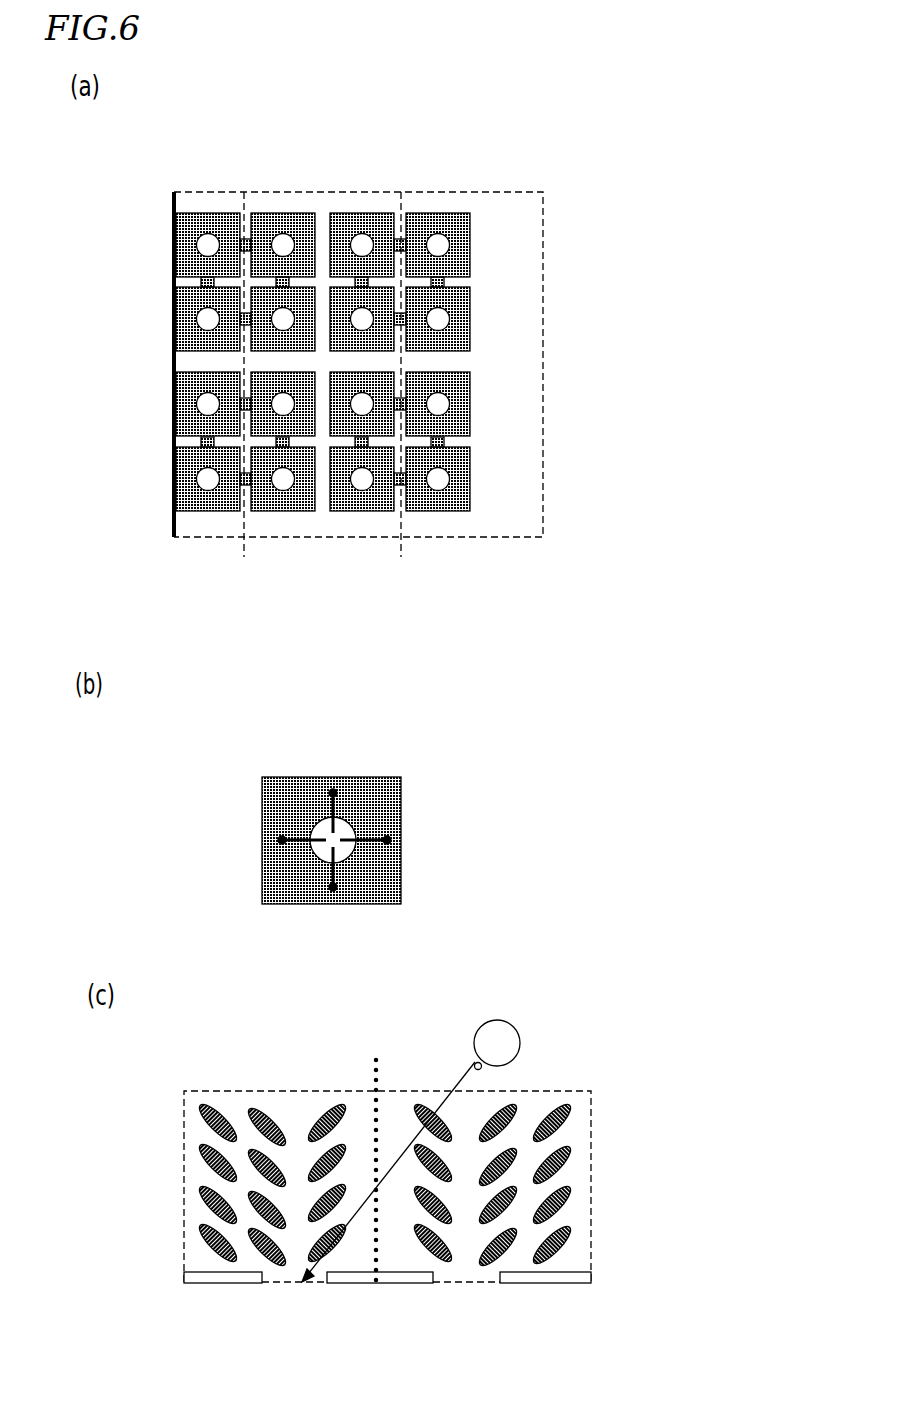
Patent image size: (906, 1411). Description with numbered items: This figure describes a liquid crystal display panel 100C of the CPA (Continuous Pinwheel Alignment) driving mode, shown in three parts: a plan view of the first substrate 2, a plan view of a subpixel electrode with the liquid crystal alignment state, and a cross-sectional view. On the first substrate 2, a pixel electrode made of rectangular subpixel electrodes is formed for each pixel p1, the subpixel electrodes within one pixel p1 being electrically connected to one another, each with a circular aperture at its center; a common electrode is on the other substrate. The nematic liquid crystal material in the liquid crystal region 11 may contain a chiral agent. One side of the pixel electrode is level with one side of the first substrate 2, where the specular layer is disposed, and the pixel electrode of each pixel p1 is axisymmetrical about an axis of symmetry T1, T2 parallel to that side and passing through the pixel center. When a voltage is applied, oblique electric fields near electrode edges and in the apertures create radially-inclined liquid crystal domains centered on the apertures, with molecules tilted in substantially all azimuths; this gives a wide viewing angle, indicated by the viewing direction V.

The liquid crystal display panel 100C is at (444, 362).
The first substrate 2 is at (535, 440).
The axis of symmetry T1 is at (246, 389).
The axis of symmetry T2 is at (403, 389).
The pixel p1 is at (453, 528).
The liquid crystal region 11 is at (580, 1187).
The viewing direction V is at (510, 1042).